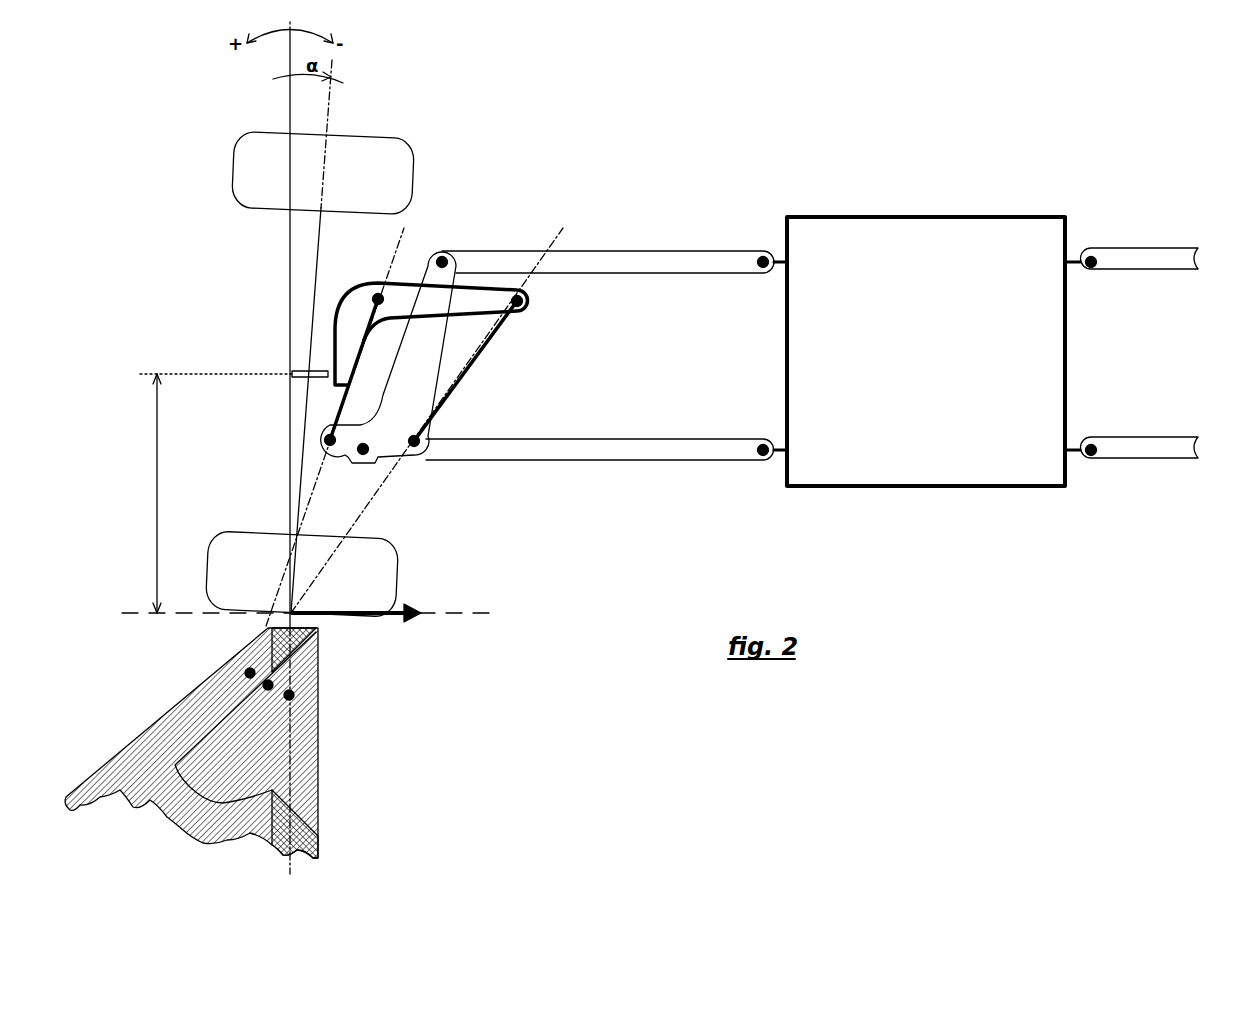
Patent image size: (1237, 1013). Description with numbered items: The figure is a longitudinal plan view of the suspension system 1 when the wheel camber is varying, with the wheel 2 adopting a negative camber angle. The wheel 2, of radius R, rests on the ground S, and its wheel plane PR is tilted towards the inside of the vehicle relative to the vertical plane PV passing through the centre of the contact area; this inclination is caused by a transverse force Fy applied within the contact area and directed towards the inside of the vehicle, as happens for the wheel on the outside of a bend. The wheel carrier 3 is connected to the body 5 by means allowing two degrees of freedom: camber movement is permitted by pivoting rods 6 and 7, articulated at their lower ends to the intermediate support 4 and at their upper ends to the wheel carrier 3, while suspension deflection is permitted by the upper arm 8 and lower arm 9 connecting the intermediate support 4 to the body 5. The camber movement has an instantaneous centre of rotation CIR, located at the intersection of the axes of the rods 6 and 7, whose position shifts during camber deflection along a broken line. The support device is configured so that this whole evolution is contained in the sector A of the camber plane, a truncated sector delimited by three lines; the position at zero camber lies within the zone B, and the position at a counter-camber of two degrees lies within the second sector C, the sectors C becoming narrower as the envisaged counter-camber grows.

The suspension system 1 is at (560, 200).
The wheel 2 is at (302, 492).
The wheel carrier 3 is at (463, 300).
The intermediate support 4 is at (424, 367).
The body 5 is at (823, 320).
The pivoting rod 6 is at (350, 408).
The pivoting rod 7 is at (492, 343).
The upper arm 8 is at (565, 258).
The lower arm 9 is at (540, 445).
The radius R is at (211, 493).
The ground S is at (462, 612).
The sector A is at (110, 757).
The zone B is at (310, 637).
The second sector C is at (310, 752).
The vertical plane PV is at (290, 98).
The wheel plane PR is at (328, 112).
The transverse force Fy is at (356, 629).
The instantaneous centre of rotation CIR is at (227, 662).